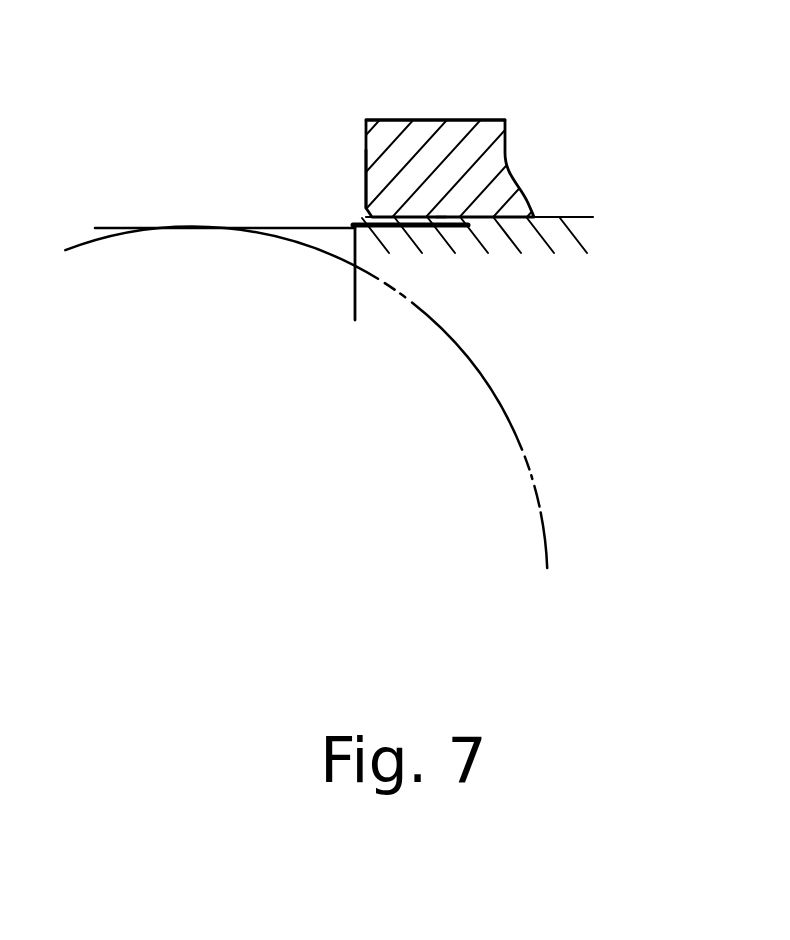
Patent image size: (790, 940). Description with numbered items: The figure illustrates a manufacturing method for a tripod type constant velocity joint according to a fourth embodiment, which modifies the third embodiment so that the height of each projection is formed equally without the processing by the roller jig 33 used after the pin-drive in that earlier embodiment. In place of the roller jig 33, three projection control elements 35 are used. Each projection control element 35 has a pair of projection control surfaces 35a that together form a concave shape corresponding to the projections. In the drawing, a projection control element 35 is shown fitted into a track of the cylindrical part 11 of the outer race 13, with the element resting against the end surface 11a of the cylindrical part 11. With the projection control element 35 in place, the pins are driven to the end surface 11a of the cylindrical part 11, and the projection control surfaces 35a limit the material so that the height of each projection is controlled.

The cylindrical part 11 is at (390, 119).
The end surface 11a is at (366, 155).
The outer race 13 is at (410, 117).
The roller jig 33 is at (490, 420).
The projection control element 35 is at (558, 240).
The projection control surface 35a is at (441, 217).